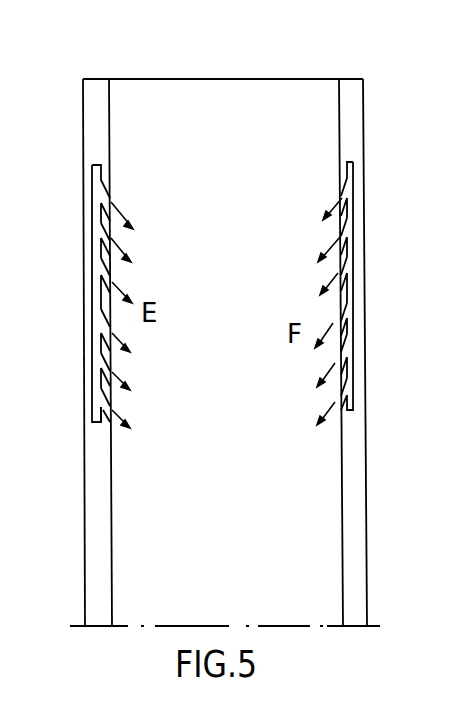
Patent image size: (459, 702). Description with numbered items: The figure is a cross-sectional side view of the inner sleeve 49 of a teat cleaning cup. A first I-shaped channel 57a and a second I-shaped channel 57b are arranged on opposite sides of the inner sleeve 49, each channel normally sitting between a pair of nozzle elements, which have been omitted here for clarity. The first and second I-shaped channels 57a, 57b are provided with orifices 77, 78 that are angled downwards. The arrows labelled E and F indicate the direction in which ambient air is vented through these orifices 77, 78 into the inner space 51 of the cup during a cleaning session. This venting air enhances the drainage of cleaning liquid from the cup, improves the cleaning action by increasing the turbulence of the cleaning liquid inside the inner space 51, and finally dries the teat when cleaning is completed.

The inner space 51 is at (238, 107).
The inner sleeve 49 is at (366, 345).
The first I-shaped channel 57a is at (98, 201).
The second I-shaped channel 57b is at (353, 213).
The orifices 77 is at (110, 206).
The orifices 78 is at (342, 198).